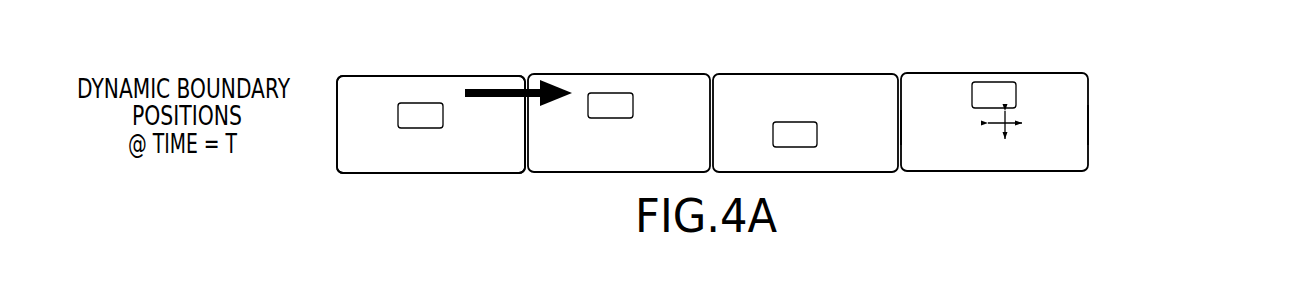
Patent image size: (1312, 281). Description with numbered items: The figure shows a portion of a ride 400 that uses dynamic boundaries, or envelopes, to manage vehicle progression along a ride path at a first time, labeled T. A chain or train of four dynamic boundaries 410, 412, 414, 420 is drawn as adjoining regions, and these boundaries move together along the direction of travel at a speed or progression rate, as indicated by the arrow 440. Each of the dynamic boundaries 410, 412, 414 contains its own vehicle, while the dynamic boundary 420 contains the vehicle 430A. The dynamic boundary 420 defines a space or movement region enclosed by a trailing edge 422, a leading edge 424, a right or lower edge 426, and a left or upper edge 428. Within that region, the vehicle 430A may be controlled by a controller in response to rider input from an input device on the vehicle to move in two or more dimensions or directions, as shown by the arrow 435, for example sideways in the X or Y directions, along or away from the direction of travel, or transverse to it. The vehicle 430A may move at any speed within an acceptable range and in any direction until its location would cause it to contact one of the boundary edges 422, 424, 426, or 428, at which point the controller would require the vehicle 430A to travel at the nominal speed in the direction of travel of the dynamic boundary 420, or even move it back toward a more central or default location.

The dynamic boundary positions diagram 400 is at (1156, 67).
The dynamic boundary 410 is at (408, 69).
The dynamic boundary 412 is at (606, 69).
The dynamic boundary 414 is at (805, 69).
The dynamic boundary 420 is at (933, 69).
The arrow 440 is at (490, 89).
The vehicle 430A is at (1000, 82).
The left (upper) edge 428 is at (1040, 73).
The trailing edge 422 is at (902, 127).
The arrow 435 is at (1010, 121).
The right (lower) edge 426 is at (962, 171).
The leading edge 424 is at (1087, 125).